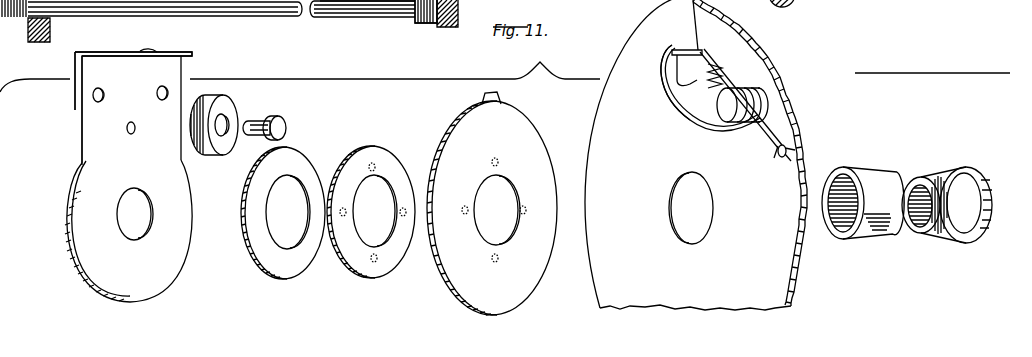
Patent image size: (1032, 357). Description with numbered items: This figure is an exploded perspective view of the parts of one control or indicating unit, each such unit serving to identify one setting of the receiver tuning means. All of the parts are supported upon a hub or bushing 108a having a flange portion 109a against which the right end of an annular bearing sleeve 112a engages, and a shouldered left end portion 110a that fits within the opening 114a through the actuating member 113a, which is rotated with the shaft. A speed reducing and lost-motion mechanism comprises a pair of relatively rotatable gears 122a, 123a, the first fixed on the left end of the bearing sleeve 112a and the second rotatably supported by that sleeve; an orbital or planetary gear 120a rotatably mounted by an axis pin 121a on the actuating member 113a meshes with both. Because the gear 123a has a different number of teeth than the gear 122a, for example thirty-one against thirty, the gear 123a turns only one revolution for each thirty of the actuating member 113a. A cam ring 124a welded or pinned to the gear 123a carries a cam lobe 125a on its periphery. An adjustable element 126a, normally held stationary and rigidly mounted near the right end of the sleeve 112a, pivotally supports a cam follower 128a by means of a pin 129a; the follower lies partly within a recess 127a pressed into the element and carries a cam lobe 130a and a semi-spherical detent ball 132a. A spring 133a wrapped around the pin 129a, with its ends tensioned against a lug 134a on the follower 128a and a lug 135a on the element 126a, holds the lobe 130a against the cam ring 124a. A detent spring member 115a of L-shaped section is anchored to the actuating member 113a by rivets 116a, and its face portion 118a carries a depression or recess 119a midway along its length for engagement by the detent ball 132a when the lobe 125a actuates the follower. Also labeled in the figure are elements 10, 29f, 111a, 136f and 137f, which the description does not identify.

The section indicator 10 is at (110, 32).
The shaft 29f is at (8, 65).
The hub or bushing 108a is at (937, 173).
The flange portion 109a is at (990, 188).
The shouldered left end portion 110a is at (938, 232).
The ring 111a is at (928, 233).
The annular bearing sleeve 112a is at (868, 170).
The actuating member 113a is at (80, 265).
The opening 114a is at (150, 217).
The detent spring member 115a is at (76, 92).
The rivets 116a is at (168, 90).
The face portion 118a is at (116, 53).
The depression or recess 119a is at (150, 53).
The orbital or planetary gear 120a is at (230, 108).
The axis pin 121a is at (282, 118).
The gear 122a is at (302, 156).
The gear 123a is at (382, 156).
The cam ring 124a is at (525, 145).
The cam lobe 125a is at (500, 98).
The adjustable element 126a is at (786, 168).
The recess 127a is at (672, 72).
The cam follower 128a is at (738, 95).
The pin 129a is at (755, 100).
The cam lobe 130a is at (705, 85).
The detent ball 132a is at (687, 46).
The spring 133a is at (713, 92).
The lug 134a is at (713, 68).
The lug 135a is at (773, 145).
The rod 136f is at (333, 17).
The knurled sleeve 137f is at (420, 24).